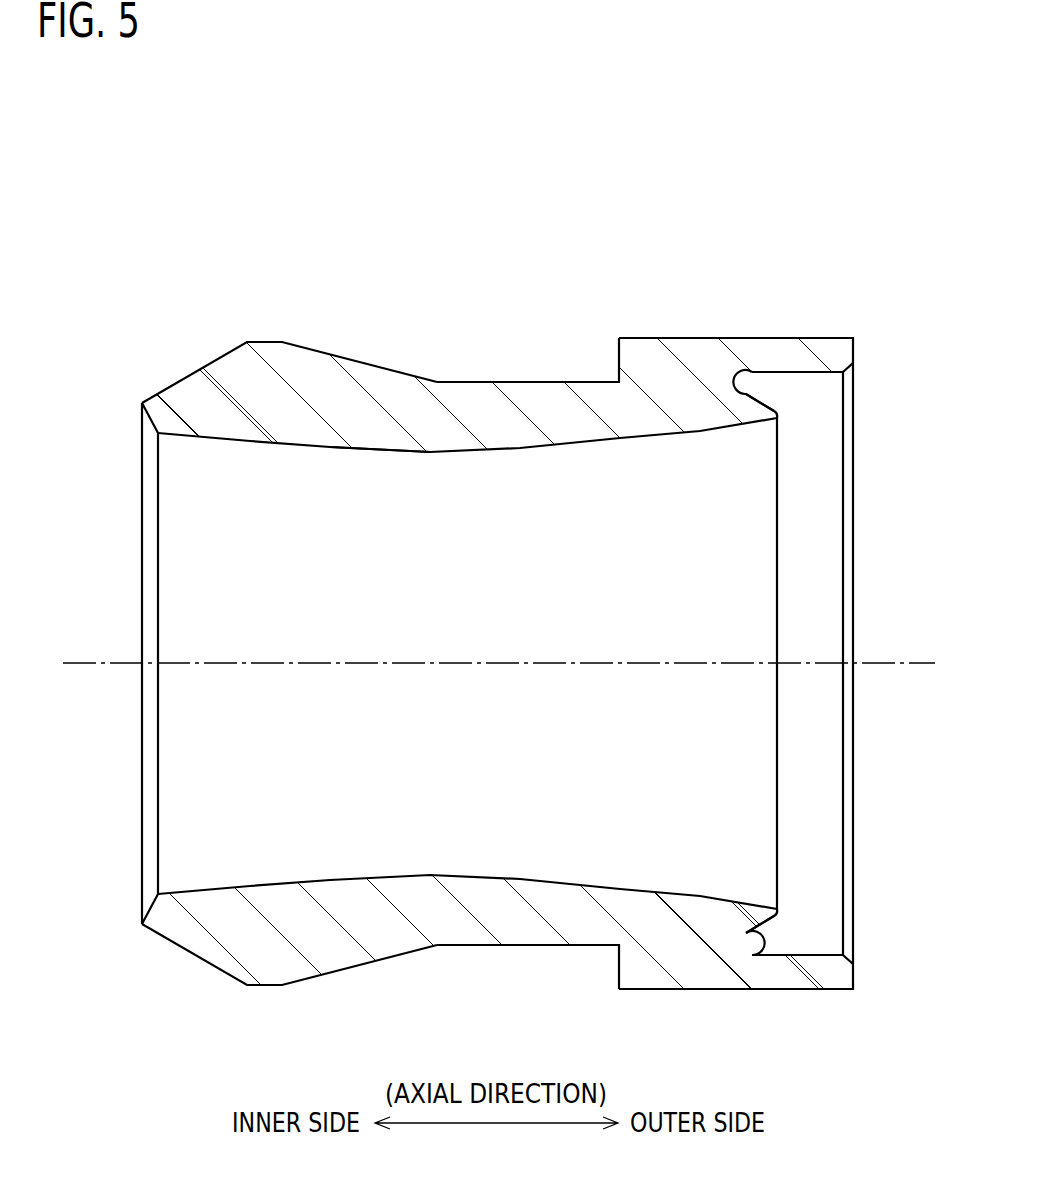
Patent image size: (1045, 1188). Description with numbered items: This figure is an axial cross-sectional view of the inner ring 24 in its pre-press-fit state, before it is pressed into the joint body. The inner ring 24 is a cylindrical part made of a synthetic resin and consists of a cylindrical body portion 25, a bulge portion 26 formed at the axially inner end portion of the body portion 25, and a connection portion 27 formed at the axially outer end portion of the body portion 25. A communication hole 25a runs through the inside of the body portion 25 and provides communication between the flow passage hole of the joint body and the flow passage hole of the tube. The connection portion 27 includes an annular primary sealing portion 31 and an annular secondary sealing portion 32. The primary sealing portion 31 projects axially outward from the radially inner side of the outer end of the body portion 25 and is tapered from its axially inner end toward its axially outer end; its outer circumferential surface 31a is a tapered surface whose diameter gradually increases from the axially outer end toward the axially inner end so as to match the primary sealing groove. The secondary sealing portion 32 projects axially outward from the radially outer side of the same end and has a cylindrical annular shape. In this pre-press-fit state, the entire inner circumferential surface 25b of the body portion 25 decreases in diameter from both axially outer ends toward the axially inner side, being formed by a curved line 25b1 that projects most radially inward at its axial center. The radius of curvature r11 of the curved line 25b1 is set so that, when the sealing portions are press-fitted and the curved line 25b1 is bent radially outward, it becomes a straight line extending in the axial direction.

The inner ring 24 is at (157, 294).
The body portion 25 is at (500, 397).
The communication hole 25a is at (519, 634).
The inner circumferential surface 25b is at (310, 437).
The curved line 25b1 is at (467, 663).
The bulge portion 26 is at (265, 352).
The connection portion 27 is at (773, 232).
The primary sealing portion 31 is at (756, 410).
The outer circumferential surface 31a is at (773, 407).
The secondary sealing portion 32 is at (832, 358).
The radius of curvature r11 is at (355, 436).